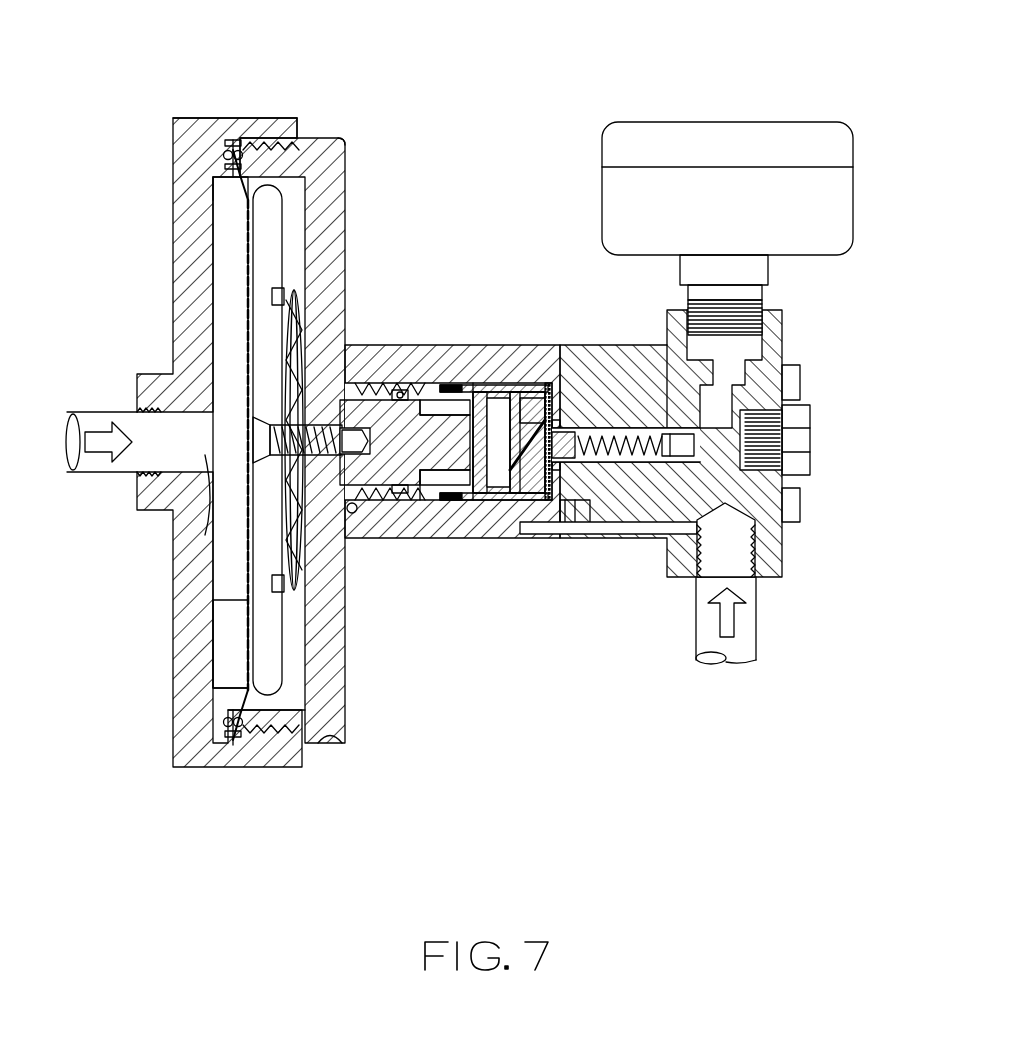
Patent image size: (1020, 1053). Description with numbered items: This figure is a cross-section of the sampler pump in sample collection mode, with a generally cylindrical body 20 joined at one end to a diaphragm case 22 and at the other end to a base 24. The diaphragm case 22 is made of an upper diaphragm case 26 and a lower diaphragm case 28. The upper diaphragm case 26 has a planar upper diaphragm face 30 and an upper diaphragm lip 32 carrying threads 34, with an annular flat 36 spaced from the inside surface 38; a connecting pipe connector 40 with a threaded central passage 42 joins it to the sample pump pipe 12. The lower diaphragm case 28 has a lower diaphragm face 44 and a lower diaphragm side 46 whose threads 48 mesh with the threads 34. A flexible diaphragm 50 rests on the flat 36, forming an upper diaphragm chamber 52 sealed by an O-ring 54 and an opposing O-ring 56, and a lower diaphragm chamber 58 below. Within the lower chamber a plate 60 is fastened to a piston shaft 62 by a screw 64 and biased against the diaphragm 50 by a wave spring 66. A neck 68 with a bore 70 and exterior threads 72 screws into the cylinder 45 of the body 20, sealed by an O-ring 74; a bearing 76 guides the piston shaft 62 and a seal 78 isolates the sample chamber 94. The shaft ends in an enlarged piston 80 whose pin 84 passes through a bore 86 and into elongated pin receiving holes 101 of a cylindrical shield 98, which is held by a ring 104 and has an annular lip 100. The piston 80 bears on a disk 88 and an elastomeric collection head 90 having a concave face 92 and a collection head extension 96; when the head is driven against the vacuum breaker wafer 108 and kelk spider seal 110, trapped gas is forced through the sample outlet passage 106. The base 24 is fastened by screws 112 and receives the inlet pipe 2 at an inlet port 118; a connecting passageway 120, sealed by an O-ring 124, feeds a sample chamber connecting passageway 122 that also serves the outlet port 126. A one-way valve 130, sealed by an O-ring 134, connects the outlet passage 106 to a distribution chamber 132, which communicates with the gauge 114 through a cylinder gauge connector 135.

The inlet pipe 2 is at (758, 617).
The sample pump pipe 12 is at (105, 465).
The body 20 is at (457, 536).
The diaphragm case 22 is at (246, 108).
The base 24 is at (770, 318).
The upper diaphragm case 26 is at (190, 168).
The lower diaphragm case 28 is at (327, 218).
The upper diaphragm face 30 is at (180, 232).
The upper diaphragm lip 32 is at (300, 122).
The threads 34 is at (332, 142).
The annular flat 36 is at (231, 138).
The inside surface 38 is at (213, 290).
The connecting pipe connector 40 is at (135, 402).
The central passage 42 is at (203, 505).
The lower diaphragm face 44 is at (333, 712).
The cylinder 45 is at (432, 400).
The lower diaphragm side 46 is at (287, 740).
The threads 48 is at (337, 740).
The diaphragm 50 is at (243, 687).
The upper diaphragm chamber 52 is at (223, 643).
The O-ring 54 is at (224, 160).
The O-ring 56 is at (247, 133).
The lower diaphragm chamber 58 is at (300, 183).
The plate 60 is at (262, 217).
The piston shaft 62 is at (372, 395).
The screw 64 is at (253, 440).
The wave spring 66 is at (300, 292).
The neck 68 is at (395, 392).
The bore 70 is at (410, 383).
The exterior threads 72 is at (380, 500).
The O-ring 74 is at (350, 515).
The bearing 76 is at (363, 500).
The seal 78 is at (428, 495).
The piston 80 is at (515, 500).
The pin 84 is at (470, 400).
The bore 86 is at (505, 440).
The disk 88 is at (482, 500).
The collection head 90 is at (500, 500).
The concave face 92 is at (590, 540).
The sample chamber 94 is at (588, 535).
The collection head extension 96 is at (552, 420).
The shield 98 is at (525, 386).
The annular lip 100 is at (546, 392).
The pin receiving holes 101 is at (490, 395).
The ring 104 is at (450, 386).
The sample outlet passage 106 is at (605, 430).
The vacuum breaker wafer 108 is at (554, 430).
The kelk spider seal 110 is at (562, 428).
The screws 112 is at (792, 385).
The gauge 114 is at (742, 130).
The inlet port 118 is at (700, 560).
The connecting passageway 120 is at (690, 527).
The sample chamber connecting passageway 122 is at (560, 538).
The O-ring 124 is at (566, 538).
The outlet port 126 is at (518, 420).
The one-way valve 130 is at (652, 538).
The distribution chamber 132 is at (785, 345).
The O-ring 134 is at (640, 360).
The cylinder gauge connector 135 is at (690, 305).